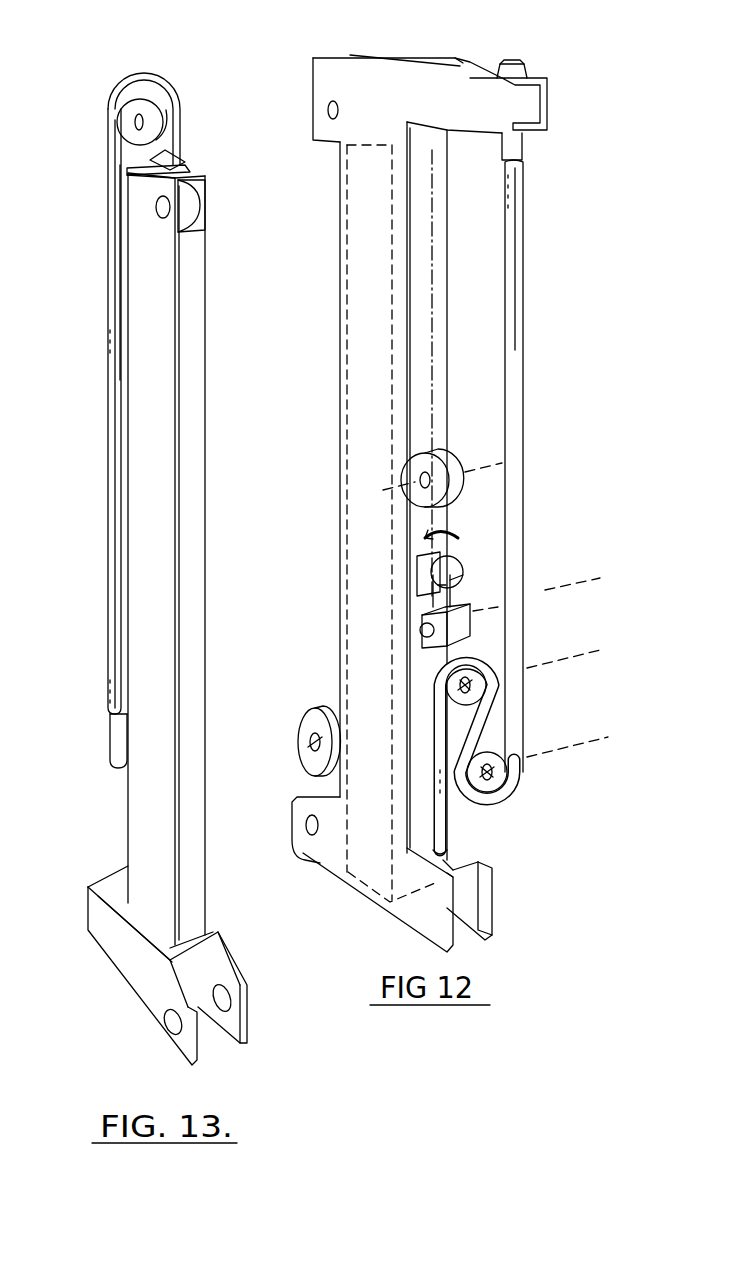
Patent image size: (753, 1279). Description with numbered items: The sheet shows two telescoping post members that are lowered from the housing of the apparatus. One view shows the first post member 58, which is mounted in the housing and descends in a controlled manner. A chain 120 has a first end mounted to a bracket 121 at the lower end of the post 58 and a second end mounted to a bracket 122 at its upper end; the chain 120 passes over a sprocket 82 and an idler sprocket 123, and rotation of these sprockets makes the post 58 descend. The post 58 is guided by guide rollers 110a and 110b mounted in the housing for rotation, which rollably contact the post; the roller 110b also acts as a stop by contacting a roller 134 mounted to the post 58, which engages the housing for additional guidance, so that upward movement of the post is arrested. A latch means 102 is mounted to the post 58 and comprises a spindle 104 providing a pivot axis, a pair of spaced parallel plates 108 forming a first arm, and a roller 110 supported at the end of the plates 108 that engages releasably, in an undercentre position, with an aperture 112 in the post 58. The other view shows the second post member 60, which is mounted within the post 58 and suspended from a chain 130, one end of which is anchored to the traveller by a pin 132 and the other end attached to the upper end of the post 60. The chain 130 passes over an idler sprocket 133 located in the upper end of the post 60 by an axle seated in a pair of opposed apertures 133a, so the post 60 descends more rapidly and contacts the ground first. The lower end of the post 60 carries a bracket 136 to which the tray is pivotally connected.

In FIG. 12, the first post member 58 is at (365, 490).
In FIG. 13, the second post member 60 is at (196, 304).
In FIG. 12, the sprocket 82 is at (475, 665).
In FIG. 12, the latch means 102 is at (425, 610).
In FIG. 12, the spindle 104 is at (420, 630).
In FIG. 12, the spaced parallel plates 108 is at (455, 598).
In FIG. 12, the roller 110 is at (455, 560).
In FIG. 12, the guide roller 110a is at (440, 455).
In FIG. 12, the guide roller 110b is at (303, 720).
In FIG. 12, the aperture 112 is at (420, 572).
In FIG. 12, the chain 120 is at (512, 450).
In FIG. 12, the bracket 121 is at (430, 925).
In FIG. 12, the bracket 122 is at (453, 105).
In FIG. 12, the idler sprocket 123 is at (493, 775).
In FIG. 13, the chain 130 is at (114, 495).
In FIG. 13, the pin 132 is at (114, 735).
In FIG. 13, the idler sprocket 133 is at (135, 124).
In FIG. 12, the apertures 133a is at (328, 112).
In FIG. 12, the roller 134 is at (305, 795).
In FIG. 13, the bracket 136 is at (122, 930).